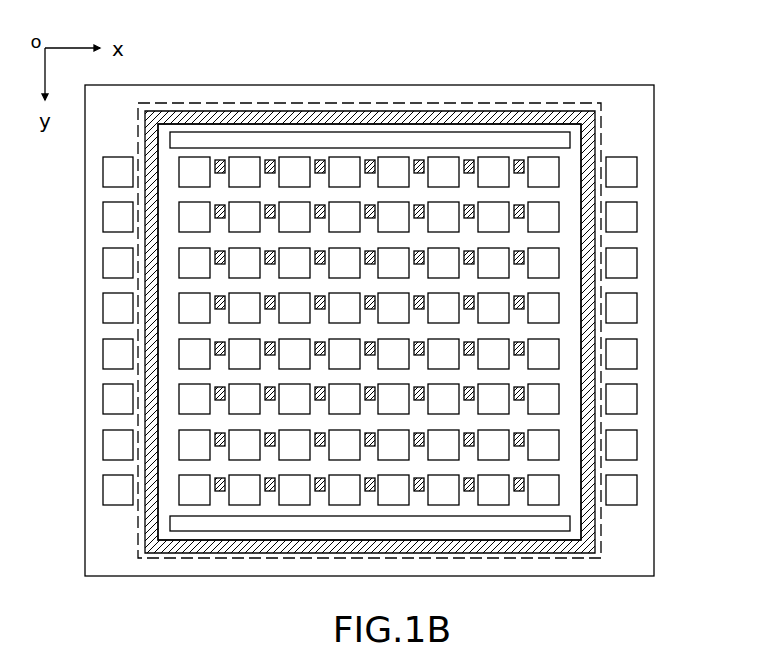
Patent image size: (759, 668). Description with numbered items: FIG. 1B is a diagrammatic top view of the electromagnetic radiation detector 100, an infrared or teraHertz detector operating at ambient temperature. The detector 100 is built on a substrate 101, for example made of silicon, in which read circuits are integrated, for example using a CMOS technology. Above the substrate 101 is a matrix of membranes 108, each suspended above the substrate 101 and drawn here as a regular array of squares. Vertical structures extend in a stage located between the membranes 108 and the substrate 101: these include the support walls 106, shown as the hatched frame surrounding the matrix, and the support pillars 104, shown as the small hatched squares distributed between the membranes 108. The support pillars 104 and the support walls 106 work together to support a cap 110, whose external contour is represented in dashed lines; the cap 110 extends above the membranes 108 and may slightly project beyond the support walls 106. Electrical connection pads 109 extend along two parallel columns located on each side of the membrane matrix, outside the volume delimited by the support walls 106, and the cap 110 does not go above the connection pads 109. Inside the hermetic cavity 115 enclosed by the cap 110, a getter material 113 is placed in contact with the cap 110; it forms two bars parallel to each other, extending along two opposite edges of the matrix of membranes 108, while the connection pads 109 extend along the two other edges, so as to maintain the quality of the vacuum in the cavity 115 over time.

The electromagnetic radiation detector 100 is at (680, 76).
The substrate 101 is at (654, 128).
The support pillars 104 is at (320, 160).
The support walls 106 is at (557, 111).
The membranes 108 is at (548, 498).
The connection pads 109 is at (110, 308).
The cap 110 is at (390, 104).
The getter material 113 is at (472, 138).
The hermetic cavity 115 is at (570, 193).